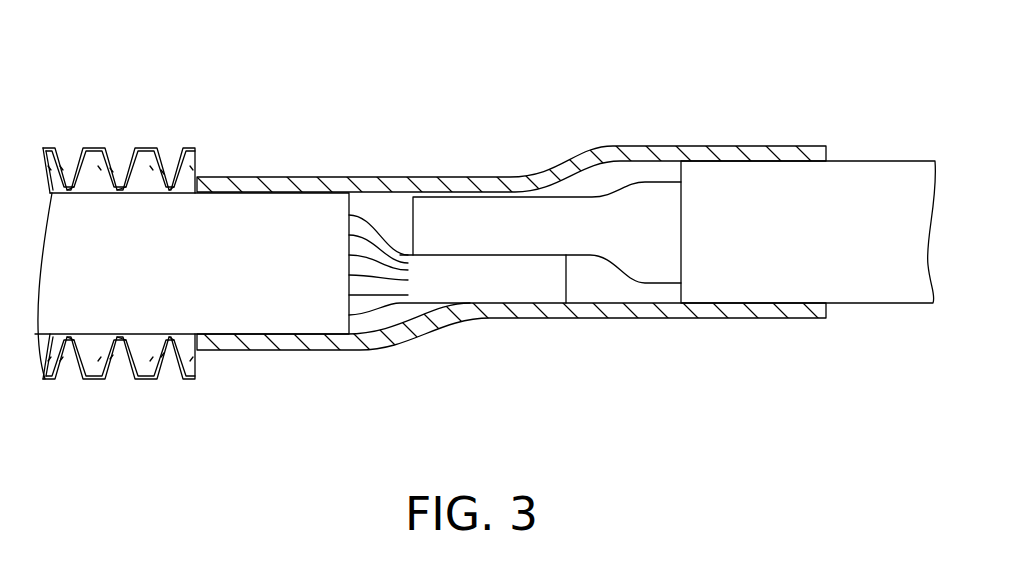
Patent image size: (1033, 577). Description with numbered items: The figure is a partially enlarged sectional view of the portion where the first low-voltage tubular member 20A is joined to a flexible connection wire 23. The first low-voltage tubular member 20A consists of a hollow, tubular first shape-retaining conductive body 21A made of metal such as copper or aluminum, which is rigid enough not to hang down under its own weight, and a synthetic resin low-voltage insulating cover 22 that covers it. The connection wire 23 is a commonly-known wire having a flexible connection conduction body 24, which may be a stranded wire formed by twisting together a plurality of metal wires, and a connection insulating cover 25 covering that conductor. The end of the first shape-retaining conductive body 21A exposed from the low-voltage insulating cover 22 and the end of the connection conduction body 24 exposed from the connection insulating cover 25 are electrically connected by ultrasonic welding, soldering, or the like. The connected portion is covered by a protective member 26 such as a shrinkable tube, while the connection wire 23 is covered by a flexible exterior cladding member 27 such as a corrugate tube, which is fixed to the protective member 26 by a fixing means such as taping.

The first low-voltage tubular member 20A is at (720, 63).
The first shape-retaining conductive body 21A is at (538, 207).
The low-voltage insulating cover 22 is at (725, 177).
The connection wire 23 is at (492, 405).
The connection conduction body 24 is at (502, 283).
The connection insulating cover 25 is at (317, 320).
The protective member 26 is at (284, 185).
The exterior cladding member 27 is at (142, 148).